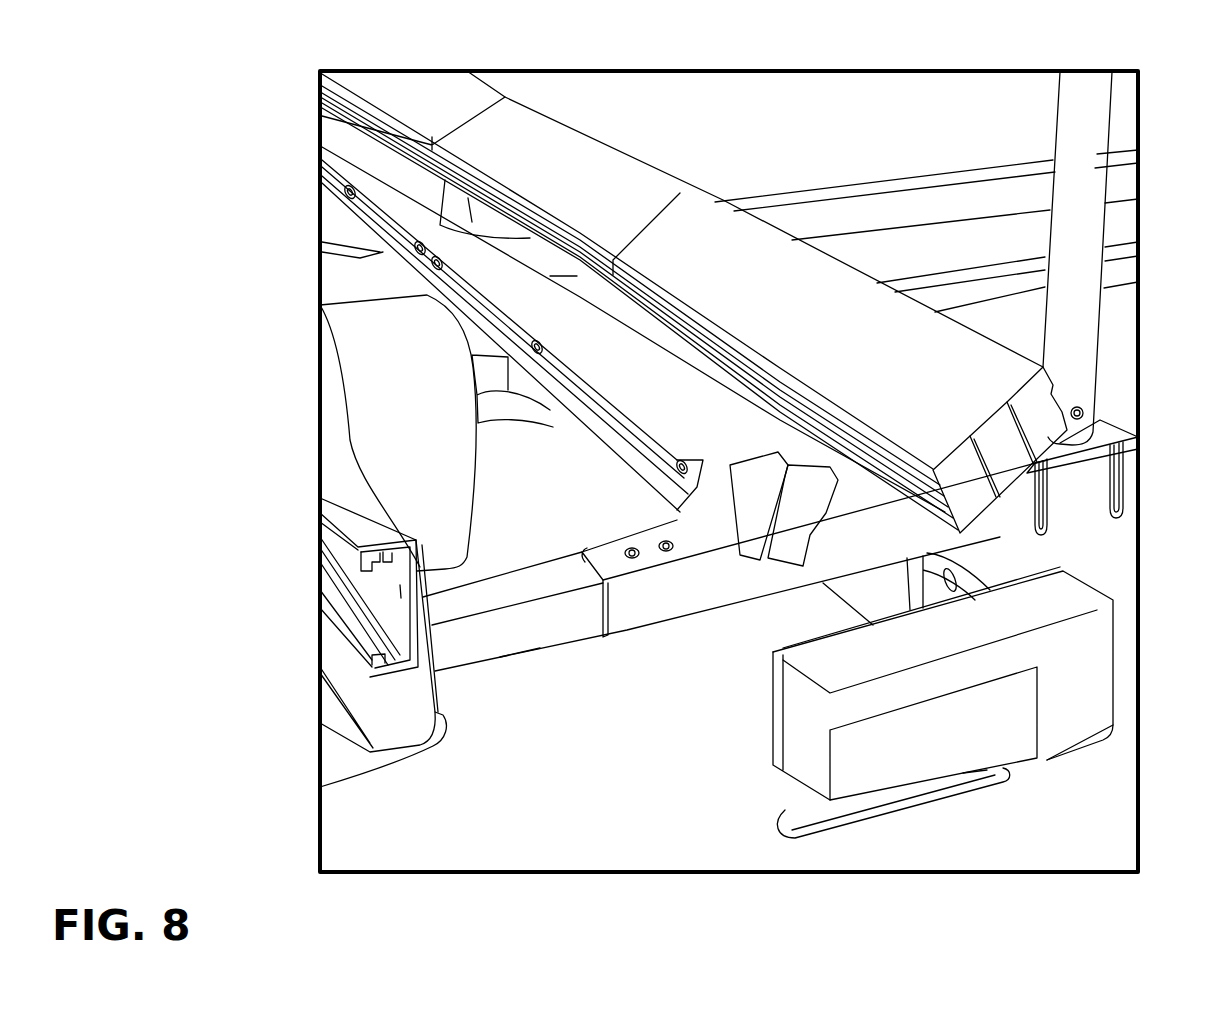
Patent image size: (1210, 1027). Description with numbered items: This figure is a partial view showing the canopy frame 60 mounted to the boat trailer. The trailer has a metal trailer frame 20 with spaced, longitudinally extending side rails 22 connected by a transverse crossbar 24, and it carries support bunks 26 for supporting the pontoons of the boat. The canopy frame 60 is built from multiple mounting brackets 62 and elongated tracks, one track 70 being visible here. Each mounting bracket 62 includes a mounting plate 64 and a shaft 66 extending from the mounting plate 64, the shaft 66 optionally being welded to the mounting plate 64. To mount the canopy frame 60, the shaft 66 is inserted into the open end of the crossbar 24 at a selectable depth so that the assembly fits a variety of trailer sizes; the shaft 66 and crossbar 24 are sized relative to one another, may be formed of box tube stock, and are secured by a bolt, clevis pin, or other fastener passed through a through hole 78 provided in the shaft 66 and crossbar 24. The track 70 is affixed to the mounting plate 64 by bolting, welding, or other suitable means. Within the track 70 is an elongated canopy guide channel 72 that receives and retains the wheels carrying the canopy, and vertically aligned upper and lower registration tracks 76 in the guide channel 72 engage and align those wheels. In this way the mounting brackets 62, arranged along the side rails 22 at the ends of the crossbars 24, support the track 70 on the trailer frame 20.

The trailer frame 20 is at (1125, 422).
The side rails 22 is at (1017, 563).
The crossbar 24 is at (672, 600).
The support bunks 26 is at (535, 160).
The canopy frame 60 is at (350, 724).
The mounting bracket 62 is at (507, 578).
The mounting plate 64 is at (433, 745).
The shaft 66 is at (518, 650).
The track 70 is at (357, 508).
The canopy guide channel 72 is at (401, 598).
The registration tracks 76 is at (390, 555).
The through hole 78 is at (667, 551).